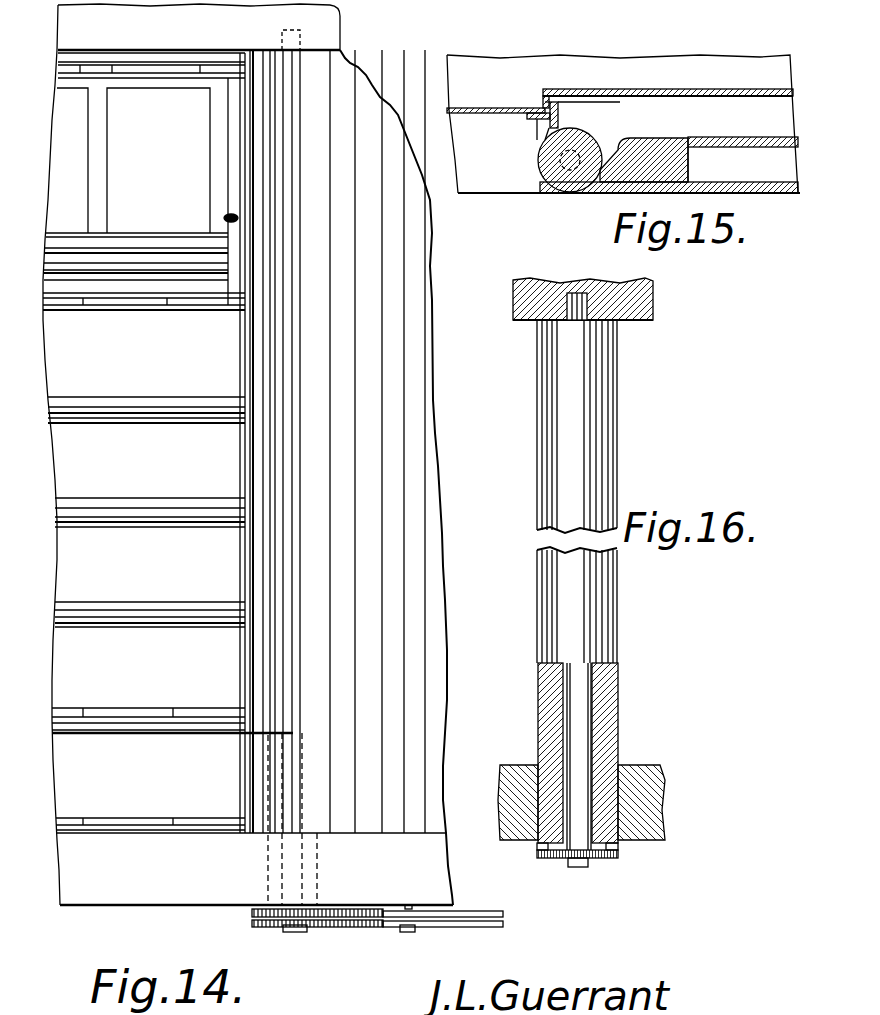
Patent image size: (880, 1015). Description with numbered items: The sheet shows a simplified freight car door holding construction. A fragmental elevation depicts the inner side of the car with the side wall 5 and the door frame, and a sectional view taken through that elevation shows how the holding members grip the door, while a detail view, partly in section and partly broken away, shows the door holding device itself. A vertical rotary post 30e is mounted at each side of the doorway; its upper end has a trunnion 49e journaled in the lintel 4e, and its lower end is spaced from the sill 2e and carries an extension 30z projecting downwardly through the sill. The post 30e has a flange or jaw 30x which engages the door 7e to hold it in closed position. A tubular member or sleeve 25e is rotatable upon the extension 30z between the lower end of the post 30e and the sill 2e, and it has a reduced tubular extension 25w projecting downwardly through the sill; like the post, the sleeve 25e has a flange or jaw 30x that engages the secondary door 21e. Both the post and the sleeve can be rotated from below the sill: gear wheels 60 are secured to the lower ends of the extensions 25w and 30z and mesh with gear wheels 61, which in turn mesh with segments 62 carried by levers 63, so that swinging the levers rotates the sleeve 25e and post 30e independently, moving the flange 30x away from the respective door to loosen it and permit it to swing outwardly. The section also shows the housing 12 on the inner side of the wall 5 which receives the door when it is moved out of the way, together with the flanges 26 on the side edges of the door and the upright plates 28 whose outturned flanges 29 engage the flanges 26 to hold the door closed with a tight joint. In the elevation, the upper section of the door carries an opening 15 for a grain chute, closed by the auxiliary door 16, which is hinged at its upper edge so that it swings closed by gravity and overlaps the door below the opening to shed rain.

In FIG. 14, the sill 2e is at (256, 819).
In FIG. 16, the sill 2e is at (518, 802).
In FIG. 16, the lintel 4e is at (653, 303).
In FIG. 15, the side wall of the car 5 is at (768, 186).
In FIG. 14, the door 7e is at (165, 547).
In FIG. 15, the door 7e is at (473, 108).
In FIG. 15, the housing 12 is at (738, 100).
In FIG. 14, the opening 15 is at (262, 370).
In FIG. 14, the auxiliary door 16 is at (142, 160).
In FIG. 14, the secondary door 21e is at (135, 800).
In FIG. 14, the sleeve 25e is at (267, 765).
In FIG. 16, the sleeve 25e is at (613, 693).
In FIG. 16, the reduced tubular extension 25w is at (598, 808).
In FIG. 15, the flanges 26 is at (572, 104).
In FIG. 15, the upright plates 28 is at (562, 102).
In FIG. 15, the outturned flanges 29 is at (542, 110).
In FIG. 14, the vertical rotary post 30e is at (275, 537).
In FIG. 15, the vertical rotary post 30e is at (570, 185).
In FIG. 16, the vertical rotary post 30e is at (552, 443).
In FIG. 15, the flange or jaw 30x is at (550, 135).
In FIG. 16, the extension 30z is at (580, 738).
In FIG. 14, the trunnion 49e is at (300, 42).
In FIG. 16, the trunnion 49e is at (580, 295).
In FIG. 14, the gear wheels 60 is at (317, 928).
In FIG. 16, the gear wheels 60 is at (622, 850).
In FIG. 14, the gear wheels 61 is at (363, 927).
In FIG. 14, the segments 62 is at (397, 913).
In FIG. 14, the levers 63 is at (478, 915).